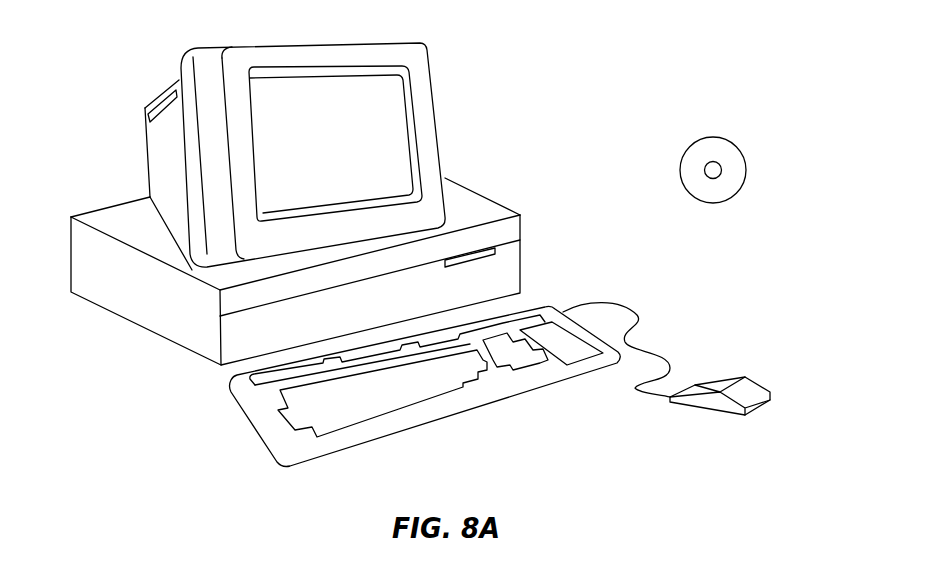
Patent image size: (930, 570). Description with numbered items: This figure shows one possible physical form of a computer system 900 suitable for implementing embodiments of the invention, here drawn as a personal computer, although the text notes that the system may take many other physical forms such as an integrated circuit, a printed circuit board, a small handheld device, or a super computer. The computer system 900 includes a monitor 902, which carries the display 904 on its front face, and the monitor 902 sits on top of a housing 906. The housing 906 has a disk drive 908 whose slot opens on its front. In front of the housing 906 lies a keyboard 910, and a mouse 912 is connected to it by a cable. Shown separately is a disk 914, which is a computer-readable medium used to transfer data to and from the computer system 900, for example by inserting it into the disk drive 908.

The computer system 900 is at (632, 43).
The monitor 902 is at (438, 152).
The display 904 is at (398, 105).
The housing 906 is at (190, 268).
The disk drive 908 is at (495, 250).
The keyboard 910 is at (427, 424).
The mouse 912 is at (762, 384).
The disk 914 is at (728, 138).